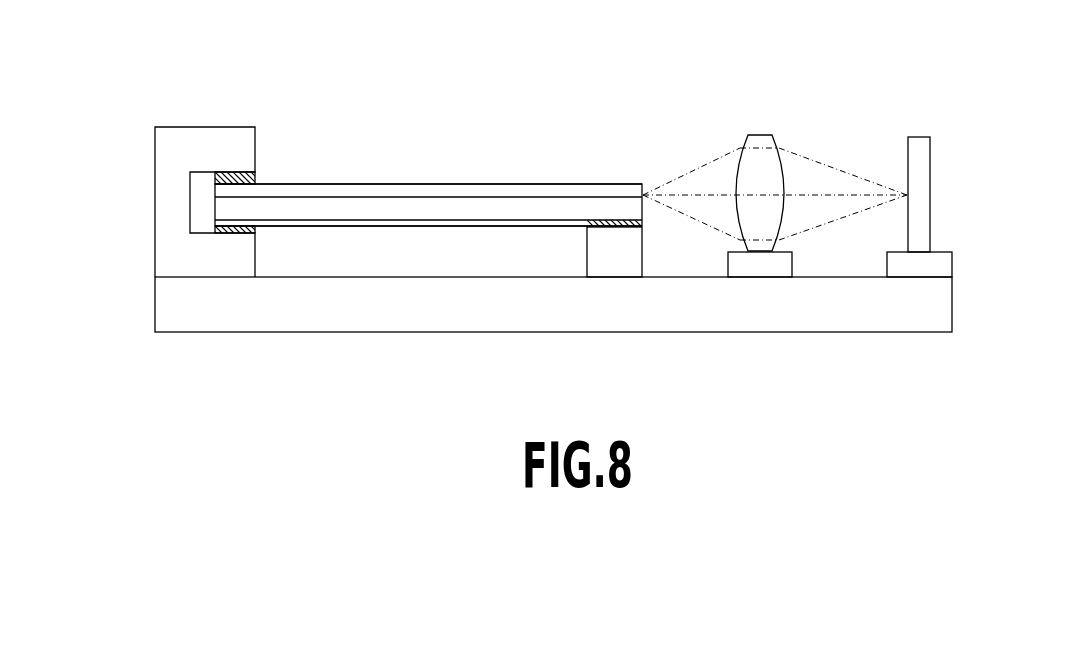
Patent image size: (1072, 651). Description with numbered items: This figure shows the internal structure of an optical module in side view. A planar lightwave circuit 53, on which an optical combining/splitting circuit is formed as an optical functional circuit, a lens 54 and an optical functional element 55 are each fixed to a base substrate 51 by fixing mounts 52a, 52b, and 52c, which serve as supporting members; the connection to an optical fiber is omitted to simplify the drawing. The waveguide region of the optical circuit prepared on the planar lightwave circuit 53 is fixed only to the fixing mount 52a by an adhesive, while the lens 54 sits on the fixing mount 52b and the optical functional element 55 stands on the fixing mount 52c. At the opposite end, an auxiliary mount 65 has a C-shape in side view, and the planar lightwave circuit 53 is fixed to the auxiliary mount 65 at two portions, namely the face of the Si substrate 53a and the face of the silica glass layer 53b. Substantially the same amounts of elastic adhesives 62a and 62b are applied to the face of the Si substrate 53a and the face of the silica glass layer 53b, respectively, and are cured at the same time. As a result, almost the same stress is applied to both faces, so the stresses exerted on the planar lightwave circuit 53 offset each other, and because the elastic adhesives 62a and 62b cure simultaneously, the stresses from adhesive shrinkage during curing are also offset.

The base substrate 51 is at (942, 300).
The fixing mount 52a is at (615, 255).
The fixing mount 52b is at (763, 268).
The fixing mount 52c is at (943, 267).
The planar lightwave circuit 53 is at (450, 233).
The face of Si substrate 53a is at (352, 213).
The face of silica glass layer 53b is at (573, 182).
The lens 54 is at (762, 134).
The optical functional element 55 is at (923, 136).
The elastic adhesive 62a is at (256, 228).
The elastic adhesive 62b is at (257, 178).
The auxiliary mount 65 is at (165, 258).